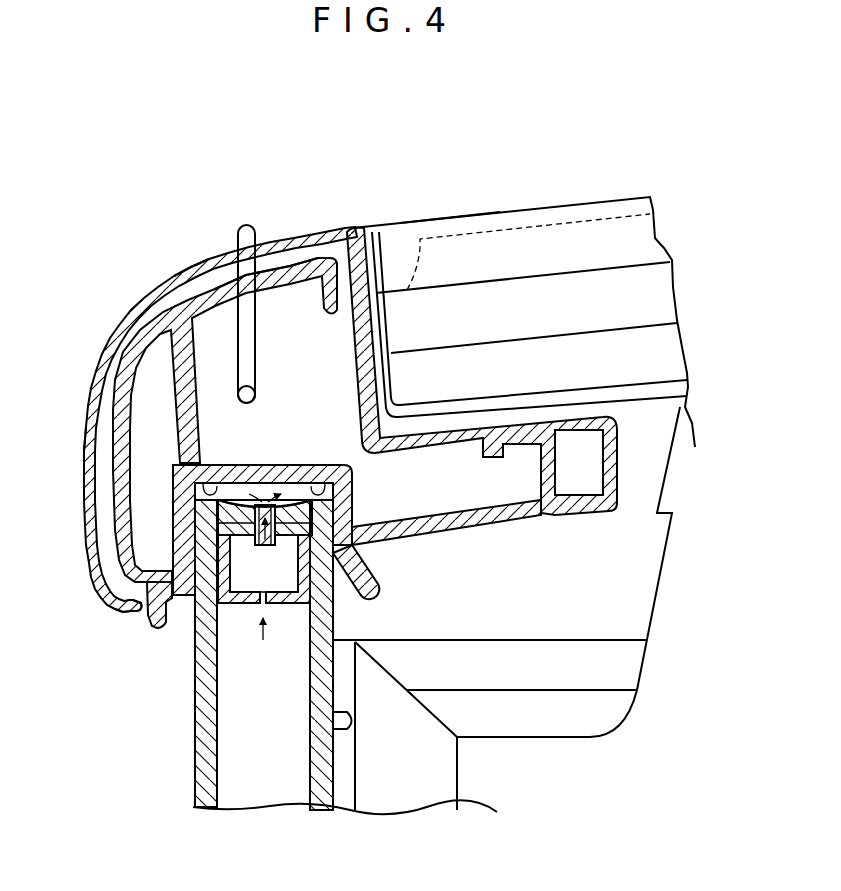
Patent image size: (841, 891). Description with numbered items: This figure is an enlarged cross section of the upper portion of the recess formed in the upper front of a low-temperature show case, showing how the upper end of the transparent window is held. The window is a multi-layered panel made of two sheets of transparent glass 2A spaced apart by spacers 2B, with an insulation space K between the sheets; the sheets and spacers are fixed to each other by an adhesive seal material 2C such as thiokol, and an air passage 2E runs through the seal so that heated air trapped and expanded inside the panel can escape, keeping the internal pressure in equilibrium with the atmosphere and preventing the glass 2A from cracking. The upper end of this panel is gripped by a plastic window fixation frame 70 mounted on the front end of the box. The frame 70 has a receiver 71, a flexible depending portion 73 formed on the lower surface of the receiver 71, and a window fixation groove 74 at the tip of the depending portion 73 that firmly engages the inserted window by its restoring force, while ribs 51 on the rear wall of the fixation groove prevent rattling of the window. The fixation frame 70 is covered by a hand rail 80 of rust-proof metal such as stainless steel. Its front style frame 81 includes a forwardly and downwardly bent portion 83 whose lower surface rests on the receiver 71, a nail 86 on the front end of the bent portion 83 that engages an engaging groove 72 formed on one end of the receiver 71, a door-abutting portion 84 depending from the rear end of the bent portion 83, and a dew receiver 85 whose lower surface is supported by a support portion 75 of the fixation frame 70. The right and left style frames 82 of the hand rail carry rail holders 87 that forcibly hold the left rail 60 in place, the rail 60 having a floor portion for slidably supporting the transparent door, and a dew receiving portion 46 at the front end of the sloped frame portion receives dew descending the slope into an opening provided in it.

The hand rail 80 is at (147, 283).
The bent portion 83 is at (190, 262).
The front style frame 81 is at (82, 417).
The nail 86 is at (117, 608).
The window fixation frame 70 is at (127, 357).
The receiver 71 is at (222, 290).
The engaging groove 72 is at (152, 622).
The flexible depending portion 73 is at (200, 416).
The window fixation groove 74 is at (303, 465).
The transparent glass 2A is at (197, 755).
The insulation space K is at (253, 780).
The adhesive seal material 2C is at (237, 503).
The spacers 2B is at (283, 604).
The air passage 2E is at (250, 550).
The door-abutting portion 84 is at (372, 333).
The support portion 75 is at (512, 446).
The dew receiver 85 is at (455, 438).
The left rail 60 is at (487, 298).
The right and left style frames 82 is at (443, 217).
The rail holders 87 is at (542, 230).
The dew receiving portion 46 is at (550, 710).
The ribs 51 is at (348, 722).